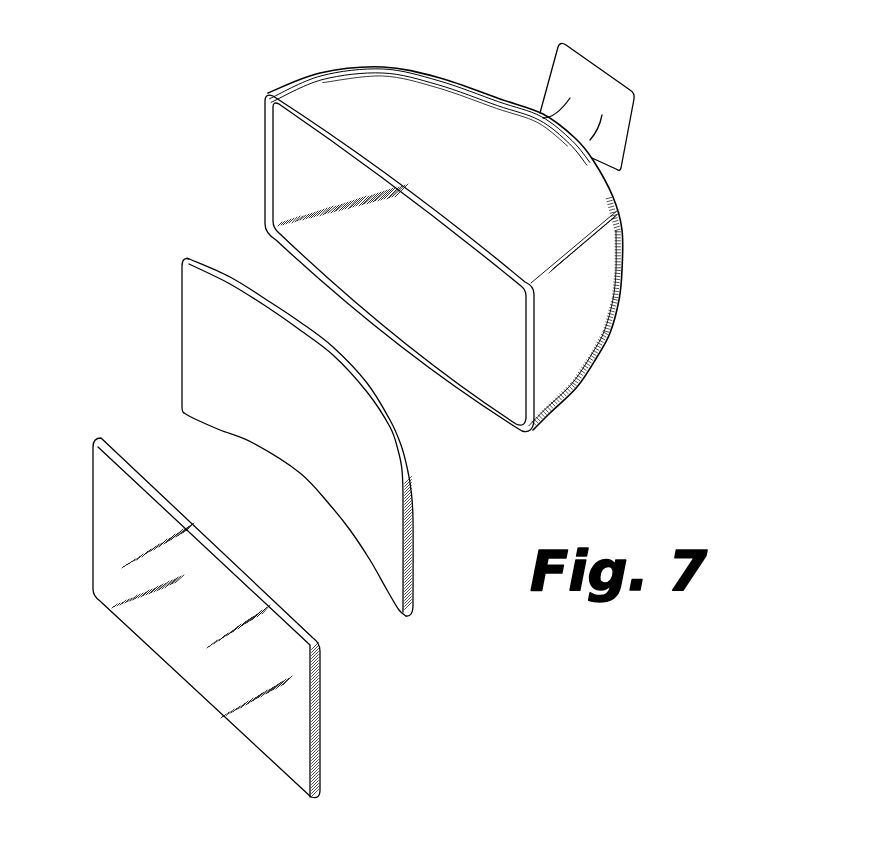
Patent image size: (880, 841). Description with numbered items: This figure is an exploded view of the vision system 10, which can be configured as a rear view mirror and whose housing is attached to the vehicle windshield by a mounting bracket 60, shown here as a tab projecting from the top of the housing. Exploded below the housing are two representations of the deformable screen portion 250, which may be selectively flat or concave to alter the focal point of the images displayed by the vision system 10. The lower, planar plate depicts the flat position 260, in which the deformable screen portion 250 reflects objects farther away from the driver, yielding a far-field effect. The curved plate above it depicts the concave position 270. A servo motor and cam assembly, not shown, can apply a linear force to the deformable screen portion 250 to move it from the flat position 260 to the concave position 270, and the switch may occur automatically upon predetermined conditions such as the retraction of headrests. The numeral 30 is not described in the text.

The lamp assembly 30 is at (60, 242).
The vision system 10 is at (609, 447).
The mounting bracket 60 is at (633, 133).
The concave position 270 is at (297, 484).
The flat position 260 is at (177, 703).
The deformable screen portion 250 is at (413, 540).